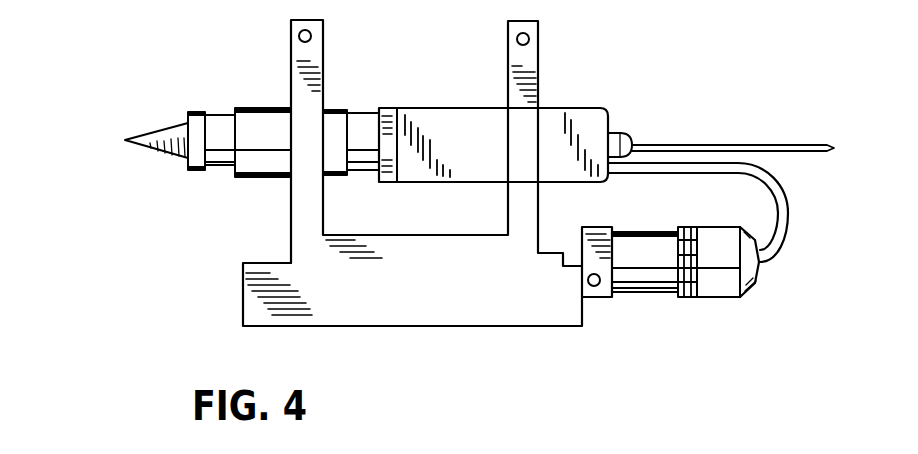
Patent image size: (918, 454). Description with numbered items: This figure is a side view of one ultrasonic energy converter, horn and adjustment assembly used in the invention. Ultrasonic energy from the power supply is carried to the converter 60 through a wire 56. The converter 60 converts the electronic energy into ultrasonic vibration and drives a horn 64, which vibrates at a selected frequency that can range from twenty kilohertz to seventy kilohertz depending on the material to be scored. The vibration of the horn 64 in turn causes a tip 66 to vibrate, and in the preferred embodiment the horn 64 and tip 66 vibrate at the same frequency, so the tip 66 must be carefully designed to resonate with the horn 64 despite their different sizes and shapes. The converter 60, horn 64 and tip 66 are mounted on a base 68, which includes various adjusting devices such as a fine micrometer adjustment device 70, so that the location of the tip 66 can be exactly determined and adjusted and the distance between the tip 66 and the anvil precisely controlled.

The wire 56 is at (713, 144).
The ultrasonic converter 60 is at (434, 114).
The horn 64 is at (258, 108).
The tip 66 is at (127, 140).
The base 68 is at (445, 313).
The fine micrometer adjustment device 70 is at (722, 292).